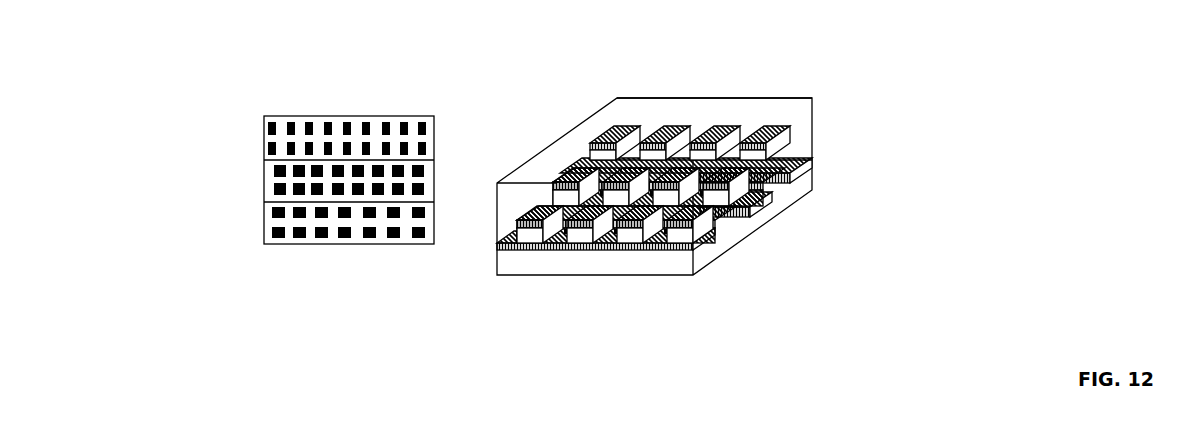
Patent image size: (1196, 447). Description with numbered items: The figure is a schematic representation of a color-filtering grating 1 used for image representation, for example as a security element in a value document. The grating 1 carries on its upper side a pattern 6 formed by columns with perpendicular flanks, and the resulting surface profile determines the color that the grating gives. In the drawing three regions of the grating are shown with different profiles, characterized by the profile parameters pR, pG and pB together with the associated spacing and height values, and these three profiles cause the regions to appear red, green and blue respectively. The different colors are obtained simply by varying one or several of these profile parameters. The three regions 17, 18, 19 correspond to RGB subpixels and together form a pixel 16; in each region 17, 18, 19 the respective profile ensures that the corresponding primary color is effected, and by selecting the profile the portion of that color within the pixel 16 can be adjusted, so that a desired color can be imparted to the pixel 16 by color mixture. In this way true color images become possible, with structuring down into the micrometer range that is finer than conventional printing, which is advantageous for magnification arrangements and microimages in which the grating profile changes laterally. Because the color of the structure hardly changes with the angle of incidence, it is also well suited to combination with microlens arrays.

The color-filtering grating 1 is at (556, 82).
The pattern 6 is at (700, 110).
The pixel 16 is at (308, 116).
The region 17 is at (264, 138).
The region 18 is at (264, 179).
The region 19 is at (264, 228).
The profile parameter of the red region pR is at (778, 150).
The profile parameter of the green region pG is at (733, 195).
The profile parameter of the blue region pB is at (717, 217).